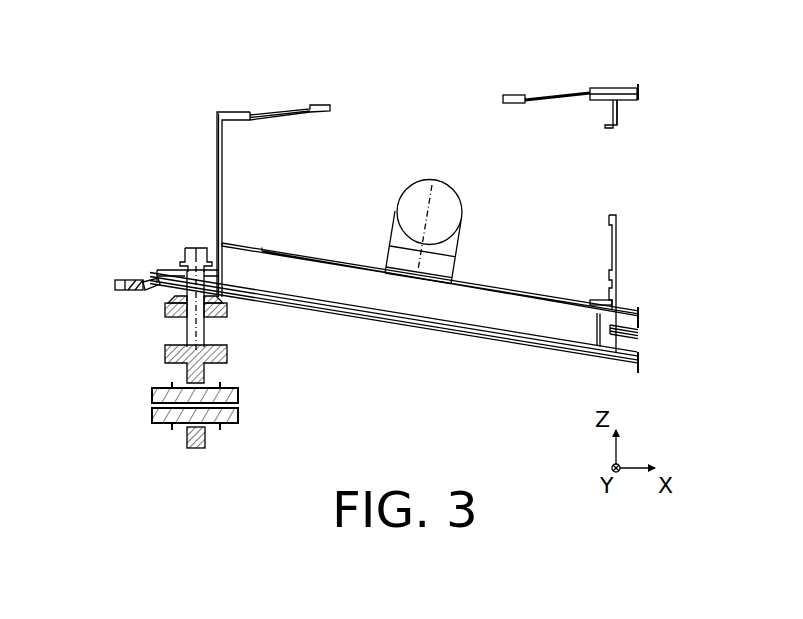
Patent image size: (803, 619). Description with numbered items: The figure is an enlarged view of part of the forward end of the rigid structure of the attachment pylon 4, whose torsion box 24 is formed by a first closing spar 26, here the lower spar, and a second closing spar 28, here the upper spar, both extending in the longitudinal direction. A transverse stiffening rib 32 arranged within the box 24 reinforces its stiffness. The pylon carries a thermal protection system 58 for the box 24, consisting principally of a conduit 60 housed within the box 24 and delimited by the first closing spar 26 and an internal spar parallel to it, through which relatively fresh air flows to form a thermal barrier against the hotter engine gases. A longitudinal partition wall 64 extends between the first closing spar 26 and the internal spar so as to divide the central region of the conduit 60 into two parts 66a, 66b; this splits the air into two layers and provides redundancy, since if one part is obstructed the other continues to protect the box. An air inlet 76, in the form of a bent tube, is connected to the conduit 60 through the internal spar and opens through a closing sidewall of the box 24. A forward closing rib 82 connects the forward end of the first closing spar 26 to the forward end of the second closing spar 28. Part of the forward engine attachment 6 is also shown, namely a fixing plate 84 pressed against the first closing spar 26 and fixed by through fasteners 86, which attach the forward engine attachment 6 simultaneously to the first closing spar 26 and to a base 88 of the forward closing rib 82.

The attachment pylon 4 is at (470, 75).
The forward engine attachment 6 is at (108, 283).
The box 24 is at (518, 350).
The first closing spar 26 is at (400, 326).
The second closing spar 28 is at (282, 110).
The transverse stiffening rib 32 is at (617, 243).
The thermal protection system 58 is at (517, 286).
The conduit 60 is at (337, 290).
The longitudinal partition wall 64 is at (640, 338).
The part of the conduit 66a is at (640, 352).
The part of the conduit 66b is at (640, 318).
The air inlet 76 is at (459, 246).
The forward closing rib 82 is at (217, 185).
The fixing plate 84 is at (153, 292).
The through fastener 86 is at (200, 330).
The base 88 is at (165, 270).